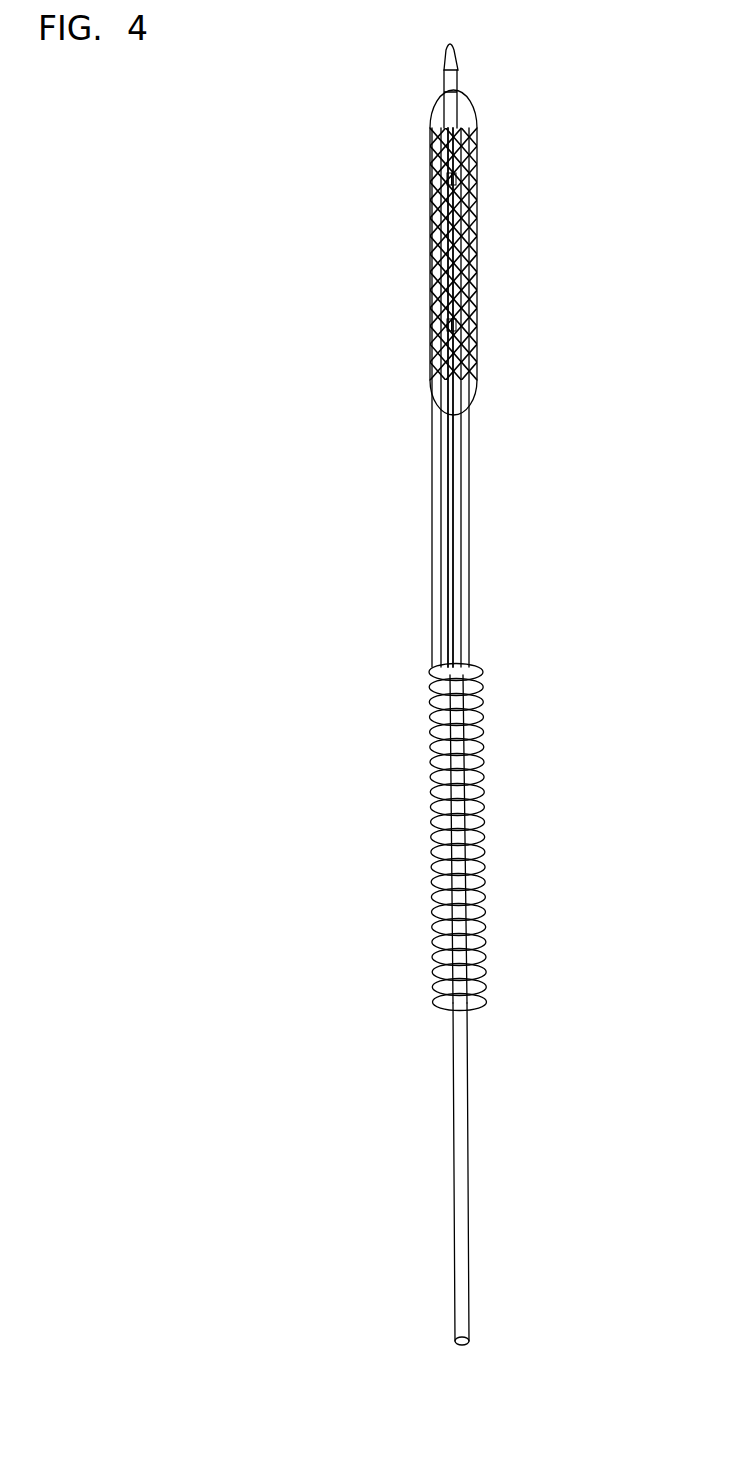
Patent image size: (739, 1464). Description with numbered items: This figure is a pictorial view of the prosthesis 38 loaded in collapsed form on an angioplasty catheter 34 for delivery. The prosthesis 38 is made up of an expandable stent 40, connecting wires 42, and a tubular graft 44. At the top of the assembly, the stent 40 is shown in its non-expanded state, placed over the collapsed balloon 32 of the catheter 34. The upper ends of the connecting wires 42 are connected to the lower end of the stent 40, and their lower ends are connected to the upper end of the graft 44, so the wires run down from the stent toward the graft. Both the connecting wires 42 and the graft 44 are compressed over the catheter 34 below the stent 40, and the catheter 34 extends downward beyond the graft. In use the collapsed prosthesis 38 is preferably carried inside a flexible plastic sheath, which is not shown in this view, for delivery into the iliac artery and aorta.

The collapsed balloon 32 is at (470, 105).
The expandable stent 40 is at (476, 258).
The connecting wires 42 is at (490, 494).
The prosthesis 38 is at (517, 607).
The tubular graft 44 is at (485, 820).
The angioplasty catheter 34 is at (480, 1095).